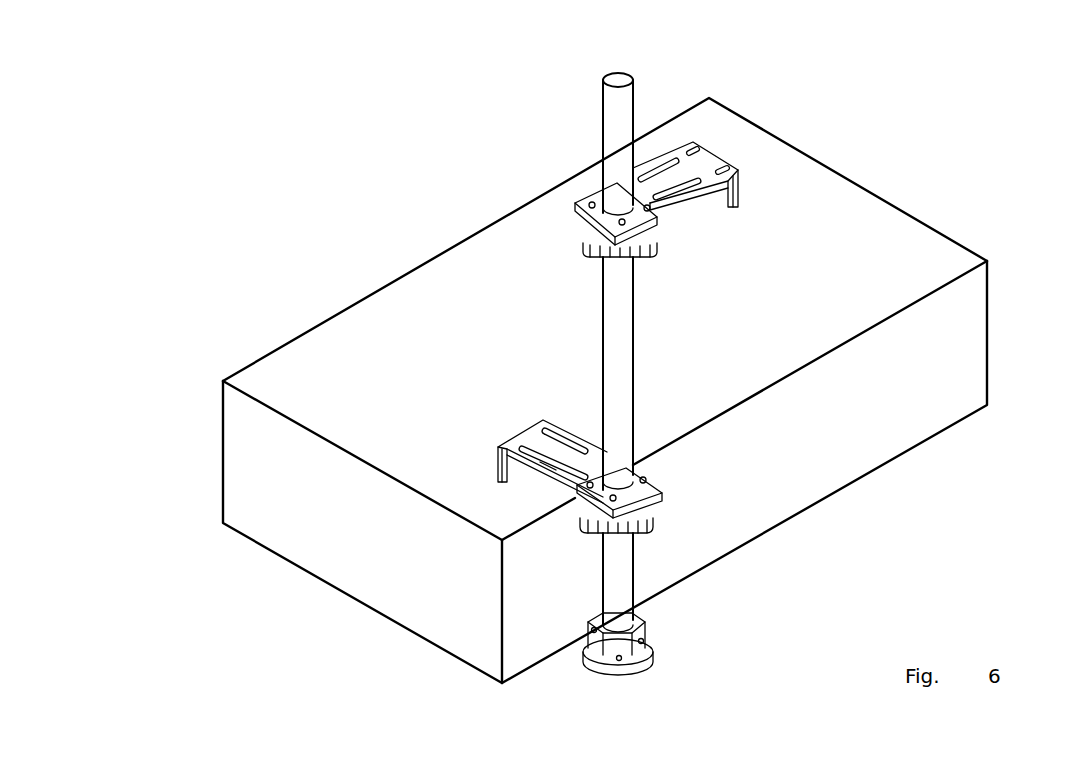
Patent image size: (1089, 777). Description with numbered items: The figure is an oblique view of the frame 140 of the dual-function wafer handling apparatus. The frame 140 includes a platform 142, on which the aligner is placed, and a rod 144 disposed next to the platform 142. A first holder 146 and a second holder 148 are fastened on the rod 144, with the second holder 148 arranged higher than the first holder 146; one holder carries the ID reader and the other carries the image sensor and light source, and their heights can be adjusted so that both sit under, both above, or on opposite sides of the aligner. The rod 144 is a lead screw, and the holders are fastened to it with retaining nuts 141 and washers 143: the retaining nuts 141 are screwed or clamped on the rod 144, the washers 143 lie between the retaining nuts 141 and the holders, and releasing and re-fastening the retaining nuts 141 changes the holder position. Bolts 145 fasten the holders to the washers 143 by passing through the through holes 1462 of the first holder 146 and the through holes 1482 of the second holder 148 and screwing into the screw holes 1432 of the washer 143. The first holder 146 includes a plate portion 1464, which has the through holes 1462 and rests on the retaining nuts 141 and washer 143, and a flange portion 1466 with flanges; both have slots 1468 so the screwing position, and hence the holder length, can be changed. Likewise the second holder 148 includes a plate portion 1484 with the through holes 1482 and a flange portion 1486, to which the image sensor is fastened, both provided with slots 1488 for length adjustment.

The frame 140 is at (292, 108).
The retaining nuts 141 is at (835, 377).
The platform 142 is at (605, 390).
The washers 143 is at (722, 603).
The rod 144 is at (673, 655).
The bolts 145 is at (750, 323).
The first holder 146 is at (514, 503).
The second holder 148 is at (807, 279).
The screw holes 1432 is at (618, 683).
The through holes 1462 is at (554, 579).
The plate portion 1464 is at (386, 503).
The flange portion 1466 is at (346, 516).
The slots 1468 is at (415, 557).
The through holes 1482 is at (831, 274).
The plate portion 1484 is at (849, 177).
The flange portion 1486 is at (829, 182).
The slots 1488 is at (853, 199).